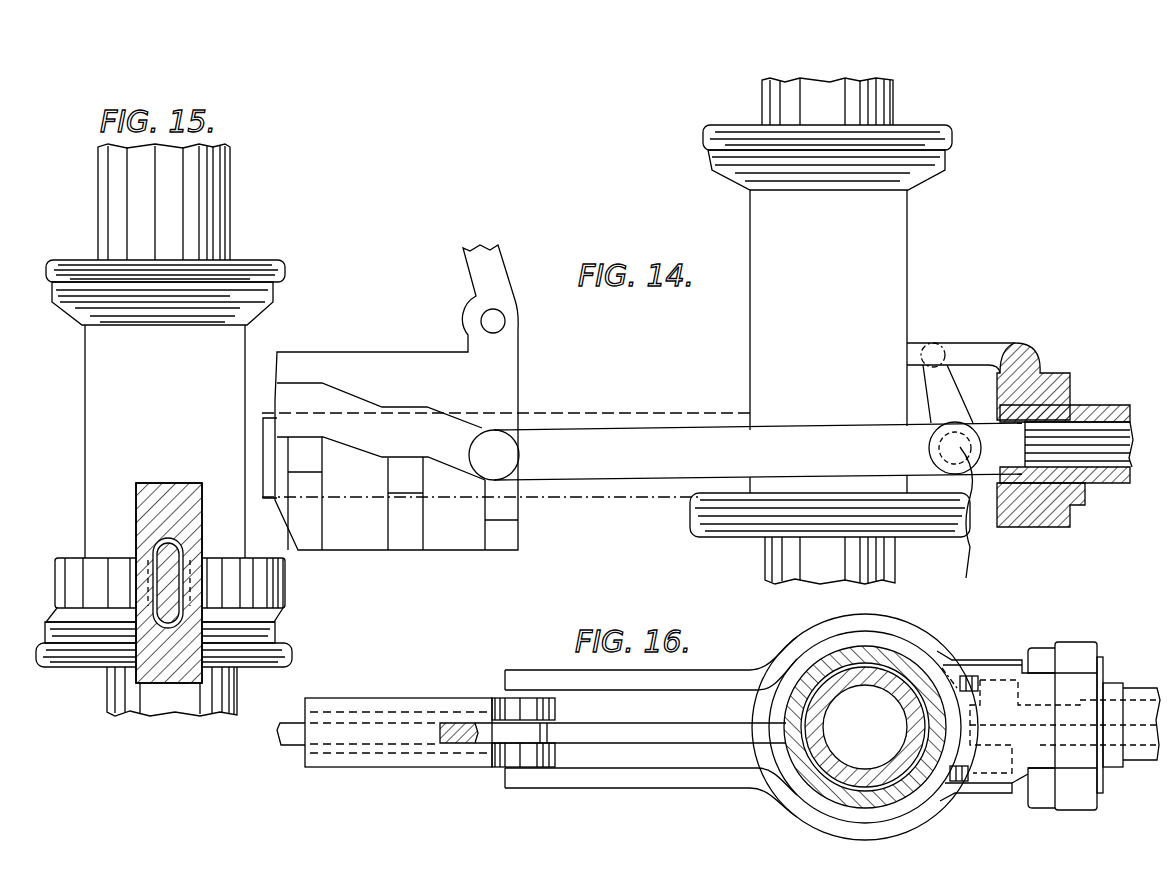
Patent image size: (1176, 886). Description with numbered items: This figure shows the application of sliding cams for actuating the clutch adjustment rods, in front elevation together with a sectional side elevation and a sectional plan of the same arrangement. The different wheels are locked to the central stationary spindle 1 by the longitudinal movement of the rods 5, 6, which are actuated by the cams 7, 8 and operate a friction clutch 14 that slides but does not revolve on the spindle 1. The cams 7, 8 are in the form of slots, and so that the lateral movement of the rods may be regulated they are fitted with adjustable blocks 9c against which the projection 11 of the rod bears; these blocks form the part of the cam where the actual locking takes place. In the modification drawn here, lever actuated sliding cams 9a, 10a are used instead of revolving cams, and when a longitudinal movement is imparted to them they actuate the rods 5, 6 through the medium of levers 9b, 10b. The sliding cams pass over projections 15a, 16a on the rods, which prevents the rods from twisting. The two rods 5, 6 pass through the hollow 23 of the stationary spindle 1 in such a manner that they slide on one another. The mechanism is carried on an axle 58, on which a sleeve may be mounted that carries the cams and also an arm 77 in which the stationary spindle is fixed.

In FIG. 15, the central stationary spindle 1 is at (187, 530).
In FIG. 14, the central stationary spindle 1 is at (362, 365).
In FIG. 14, the rod 5 is at (1063, 447).
In FIG. 16, the rod 5 is at (1083, 737).
In FIG. 16, the rod 6 is at (1143, 728).
In FIG. 16, the cam 7 is at (458, 757).
In FIG. 15, the cam 8 is at (157, 512).
In FIG. 15, the sliding cam 9a is at (183, 591).
In FIG. 14, the sliding cam 9a is at (413, 435).
In FIG. 16, the sliding cam 9a is at (377, 760).
In FIG. 15, the lever 9b is at (273, 610).
In FIG. 14, the lever 9b is at (583, 460).
In FIG. 16, the lever 9b is at (548, 780).
In FIG. 14, the adjustable block 9c is at (302, 457).
In FIG. 15, the sliding cam 10a is at (148, 583).
In FIG. 16, the sliding cam 10a is at (373, 707).
In FIG. 15, the lever 10b is at (73, 600).
In FIG. 16, the lever 10b is at (643, 682).
In FIG. 14, the projection 11 is at (1030, 362).
In FIG. 15, the friction clutch 14 is at (165, 409).
In FIG. 14, the friction clutch 14 is at (892, 218).
In FIG. 16, the friction clutch 14 is at (915, 672).
In FIG. 14, the projection 15a is at (961, 465).
In FIG. 16, the projection 15a is at (1003, 697).
In FIG. 16, the projection 16a is at (988, 760).
In FIG. 14, the hollow of the stationary spindle 23 is at (1030, 465).
In FIG. 15, the axle 58 is at (200, 212).
In FIG. 14, the axle 58 is at (840, 100).
In FIG. 16, the axle 58 is at (882, 678).
In FIG. 16, the arm 77 is at (1050, 700).